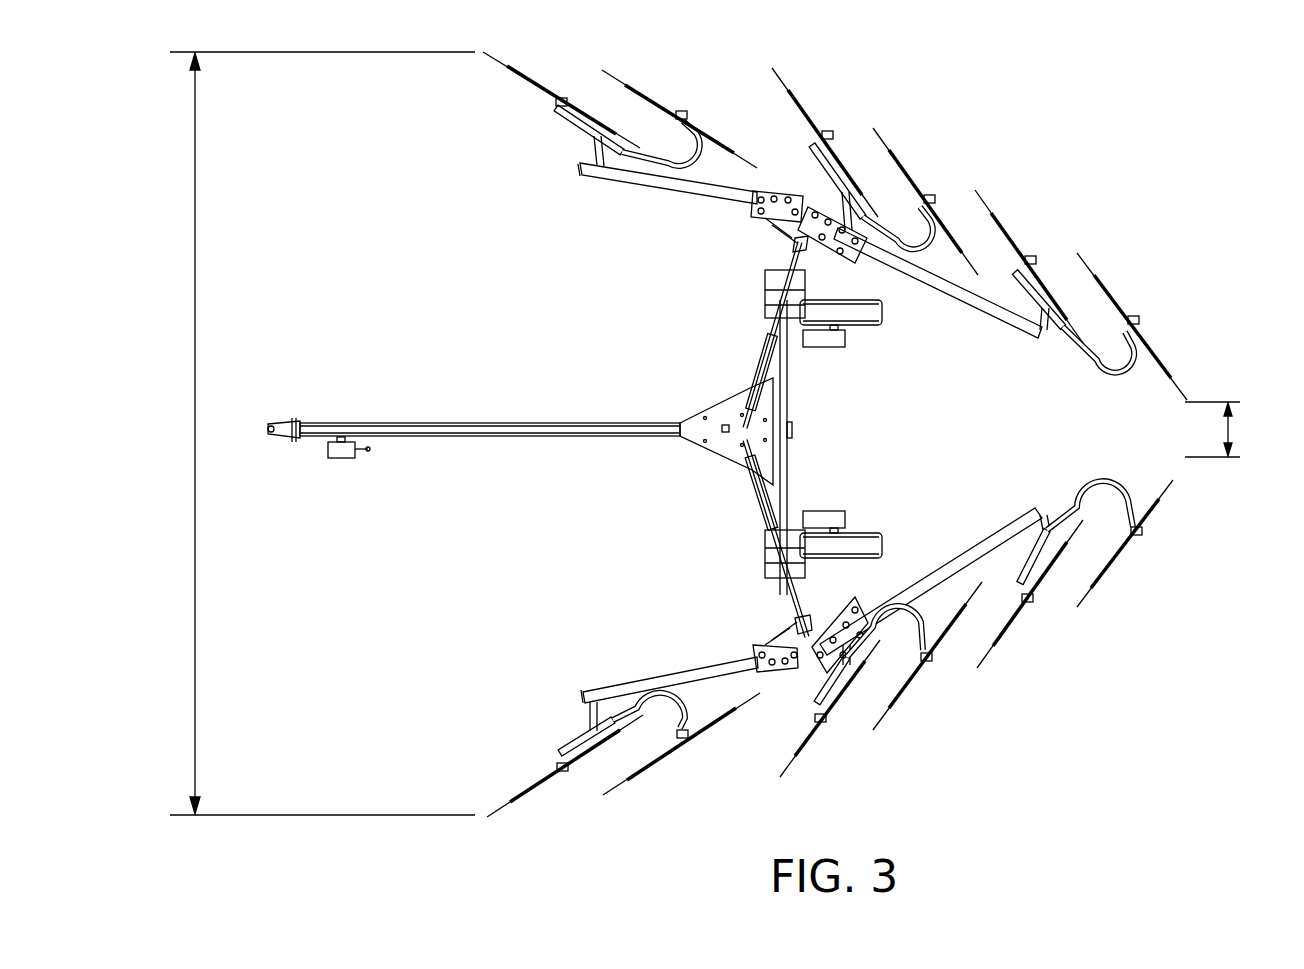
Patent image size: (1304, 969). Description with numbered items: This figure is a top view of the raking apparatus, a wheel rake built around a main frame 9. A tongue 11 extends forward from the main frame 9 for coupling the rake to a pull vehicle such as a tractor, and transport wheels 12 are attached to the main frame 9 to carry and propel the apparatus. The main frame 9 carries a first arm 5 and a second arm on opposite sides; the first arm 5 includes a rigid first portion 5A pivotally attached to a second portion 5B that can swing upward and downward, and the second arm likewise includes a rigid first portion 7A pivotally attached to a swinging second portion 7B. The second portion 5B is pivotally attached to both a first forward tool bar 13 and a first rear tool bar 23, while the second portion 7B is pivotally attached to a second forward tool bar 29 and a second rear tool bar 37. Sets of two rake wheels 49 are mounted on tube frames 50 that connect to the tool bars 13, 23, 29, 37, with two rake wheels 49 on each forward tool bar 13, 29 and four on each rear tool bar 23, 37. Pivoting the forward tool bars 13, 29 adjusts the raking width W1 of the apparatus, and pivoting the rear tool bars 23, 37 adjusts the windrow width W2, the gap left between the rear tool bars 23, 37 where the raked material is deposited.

The first arm 5 is at (750, 546).
The rigid first portion 5A is at (760, 535).
The second portion 5B is at (790, 604).
The rigid first portion 7A is at (762, 310).
The second portion 7B is at (805, 263).
The main frame 9 is at (742, 392).
The tongue 11 is at (405, 421).
The transport wheels 12 is at (865, 325).
The first forward tool bar 13 is at (702, 668).
The first rear tool bar 23 is at (956, 560).
The second forward tool bar 29 is at (648, 183).
The second rear tool bar 37 is at (1175, 380).
The rake wheels 49 is at (500, 61).
The tube frames 50 is at (648, 708).
The raking width W1 is at (195, 233).
The windrow width W2 is at (1232, 430).